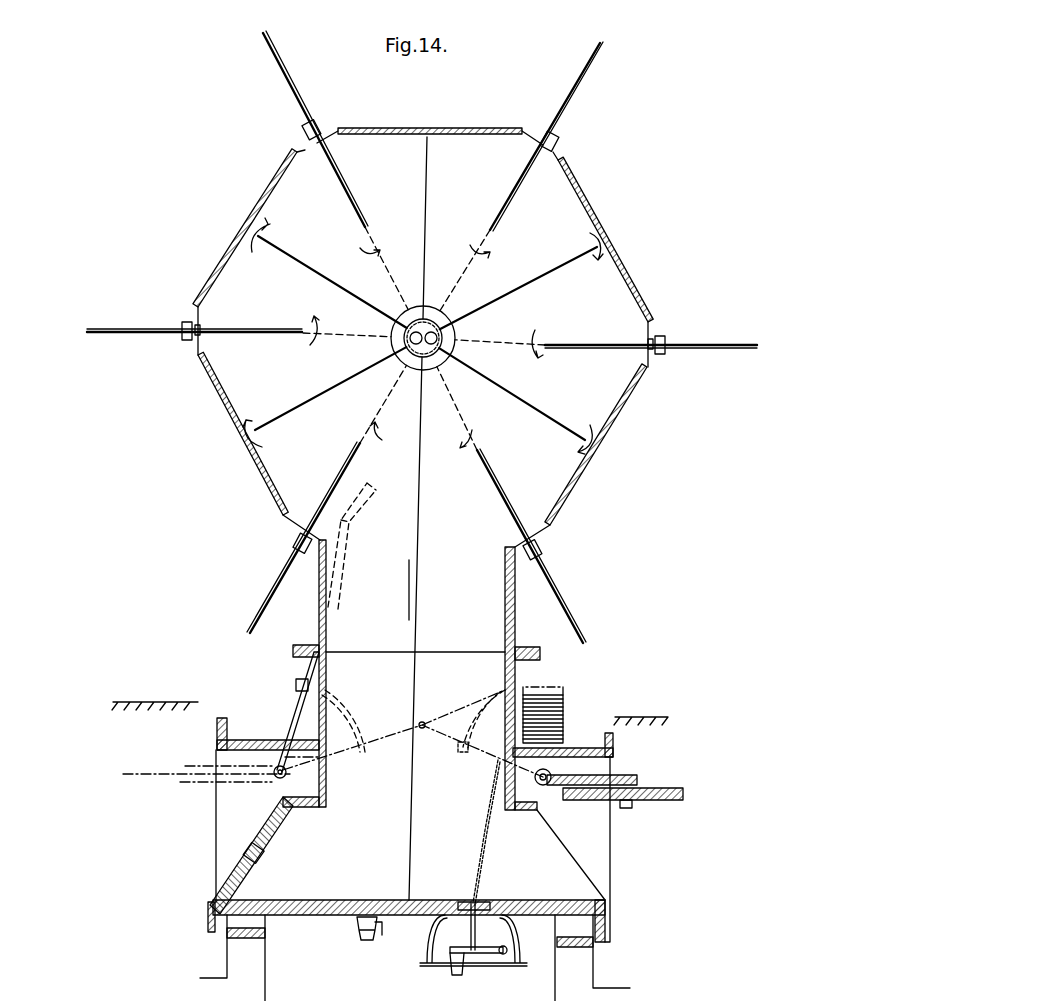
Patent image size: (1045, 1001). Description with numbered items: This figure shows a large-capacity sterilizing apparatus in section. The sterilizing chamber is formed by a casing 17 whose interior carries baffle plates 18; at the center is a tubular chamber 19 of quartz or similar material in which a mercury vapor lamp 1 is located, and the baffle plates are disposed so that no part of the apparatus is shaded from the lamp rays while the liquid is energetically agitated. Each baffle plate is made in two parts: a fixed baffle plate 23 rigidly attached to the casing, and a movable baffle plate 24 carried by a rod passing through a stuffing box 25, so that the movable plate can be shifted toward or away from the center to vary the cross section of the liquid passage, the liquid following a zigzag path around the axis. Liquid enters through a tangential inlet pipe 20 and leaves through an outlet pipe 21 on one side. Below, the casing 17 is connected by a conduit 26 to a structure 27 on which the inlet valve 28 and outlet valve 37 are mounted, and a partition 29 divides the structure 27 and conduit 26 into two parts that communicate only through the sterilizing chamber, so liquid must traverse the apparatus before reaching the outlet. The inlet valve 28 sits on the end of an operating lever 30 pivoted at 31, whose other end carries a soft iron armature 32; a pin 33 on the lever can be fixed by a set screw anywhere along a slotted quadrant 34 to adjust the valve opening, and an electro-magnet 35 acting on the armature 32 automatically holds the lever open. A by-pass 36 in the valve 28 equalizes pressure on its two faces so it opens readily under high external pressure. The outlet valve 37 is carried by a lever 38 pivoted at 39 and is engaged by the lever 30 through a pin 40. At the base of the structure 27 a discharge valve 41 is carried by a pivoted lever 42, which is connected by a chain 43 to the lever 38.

The mercury vapor lamp 1 is at (416, 370).
The casing 17 is at (250, 248).
The baffle plates 18 is at (345, 292).
The tubular chamber 19 is at (416, 312).
The inlet pipe 20 is at (390, 851).
The outlet pipe 21 is at (448, 818).
The fixed baffle plate 23 is at (355, 215).
The movable baffle plate 24 is at (362, 206).
The stuffing box 25 is at (338, 122).
The conduit 26 is at (417, 675).
The structure 27 is at (300, 665).
The inlet valve 28 is at (244, 838).
The partition 29 is at (415, 506).
The operating lever 30 is at (290, 728).
The pivot 31 is at (270, 780).
The soft iron armature 32 is at (356, 516).
The pin 33 is at (294, 686).
The slotted quadrant 34 is at (340, 686).
The electro-magnet 35 is at (564, 705).
The by-pass 36 is at (245, 850).
The outlet valve 37 is at (615, 775).
The lever 38 is at (478, 758).
The pivot 39 is at (545, 786).
The pin 40 is at (423, 720).
The discharge valve 41 is at (478, 902).
The pivoted lever 42 is at (480, 962).
The chain 43 is at (478, 858).